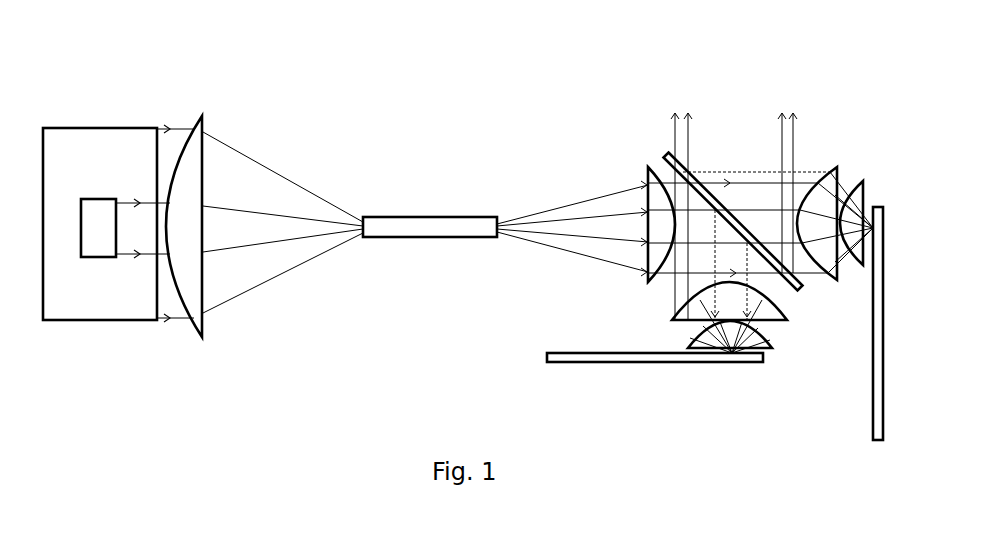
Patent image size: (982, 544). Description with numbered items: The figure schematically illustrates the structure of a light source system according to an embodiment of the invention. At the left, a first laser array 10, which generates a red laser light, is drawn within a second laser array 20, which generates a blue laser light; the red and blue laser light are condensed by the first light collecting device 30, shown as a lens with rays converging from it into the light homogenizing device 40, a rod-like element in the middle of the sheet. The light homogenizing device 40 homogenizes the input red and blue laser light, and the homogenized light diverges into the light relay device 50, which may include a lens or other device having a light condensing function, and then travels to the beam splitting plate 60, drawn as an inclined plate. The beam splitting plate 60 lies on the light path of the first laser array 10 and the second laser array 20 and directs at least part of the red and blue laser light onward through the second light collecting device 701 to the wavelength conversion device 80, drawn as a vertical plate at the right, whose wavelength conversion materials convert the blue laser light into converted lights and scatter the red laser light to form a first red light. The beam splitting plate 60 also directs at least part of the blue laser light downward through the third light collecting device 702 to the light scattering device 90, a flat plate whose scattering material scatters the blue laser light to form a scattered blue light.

The first laser array 10 is at (93, 198).
The second laser array 20 is at (117, 153).
The first light collecting device 30 is at (200, 126).
The light homogenizing device 40 is at (398, 216).
The light relay device 50 is at (648, 167).
The beam splitting plate 60 is at (665, 153).
The second light collecting device 701 is at (838, 280).
The third light collecting device 702 is at (787, 322).
The wavelength conversion device 80 is at (873, 427).
The light scattering device 90 is at (618, 353).